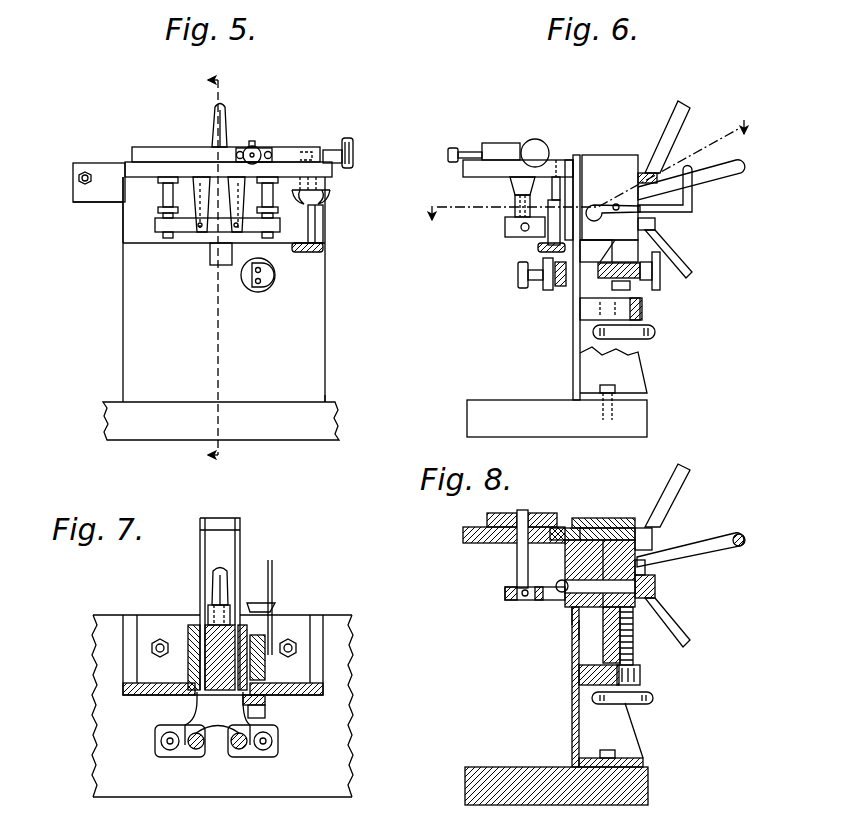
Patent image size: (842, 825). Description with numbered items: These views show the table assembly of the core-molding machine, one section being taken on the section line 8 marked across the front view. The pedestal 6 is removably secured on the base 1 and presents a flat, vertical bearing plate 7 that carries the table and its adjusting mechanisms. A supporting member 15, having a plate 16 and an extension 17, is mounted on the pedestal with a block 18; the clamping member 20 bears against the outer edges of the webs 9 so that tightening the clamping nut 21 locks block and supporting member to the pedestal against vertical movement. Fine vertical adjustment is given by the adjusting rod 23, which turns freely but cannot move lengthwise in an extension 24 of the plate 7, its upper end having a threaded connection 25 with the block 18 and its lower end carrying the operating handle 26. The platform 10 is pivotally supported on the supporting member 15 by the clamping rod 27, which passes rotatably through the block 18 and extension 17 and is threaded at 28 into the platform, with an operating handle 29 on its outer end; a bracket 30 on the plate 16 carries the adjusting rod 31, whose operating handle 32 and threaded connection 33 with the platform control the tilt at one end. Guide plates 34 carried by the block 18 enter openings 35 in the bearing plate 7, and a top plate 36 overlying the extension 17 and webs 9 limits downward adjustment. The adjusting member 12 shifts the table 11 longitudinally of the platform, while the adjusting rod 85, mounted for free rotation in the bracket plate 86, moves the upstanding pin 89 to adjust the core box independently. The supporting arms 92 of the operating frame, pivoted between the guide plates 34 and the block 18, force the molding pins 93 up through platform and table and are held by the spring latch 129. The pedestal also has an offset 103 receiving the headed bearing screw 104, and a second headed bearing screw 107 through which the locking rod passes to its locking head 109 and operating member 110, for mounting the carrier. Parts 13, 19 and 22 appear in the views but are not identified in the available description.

In FIG. 5, the base 1 is at (263, 440).
In FIG. 6, the base 1 is at (470, 424).
In FIG. 7, the base 1 is at (305, 797).
In FIG. 8, the base 1 is at (470, 790).
In FIG. 5, the pedestal 6 is at (325, 378).
In FIG. 6, the pedestal 6 is at (637, 393).
In FIG. 8, the pedestal 6 is at (628, 752).
In FIG. 5, the bearing plate 7 is at (224, 289).
In FIG. 6, the bearing plate 7 is at (573, 350).
In FIG. 7, the bearing plate 7 is at (125, 688).
In FIG. 8, the bearing plate 7 is at (572, 735).
In FIG. 5, the section line 8 is at (194, 262).
In FIG. 8, the section line 8 is at (572, 625).
In FIG. 6, the webs 9 is at (598, 250).
In FIG. 7, the webs 9 is at (190, 668).
In FIG. 8, the webs 9 is at (603, 615).
In FIG. 5, the platform 10 is at (140, 170).
In FIG. 6, the platform 10 is at (465, 170).
In FIG. 8, the platform 10 is at (463, 536).
In FIG. 5, the table 11 is at (170, 157).
In FIG. 6, the table 11 is at (493, 148).
In FIG. 8, the table 11 is at (487, 516).
In FIG. 5, the adjusting member 12 is at (348, 140).
In FIG. 6, the adjusting member 12 is at (545, 148).
In FIG. 5, the screw shaft 13 is at (330, 150).
In FIG. 6, the supporting member 15 is at (570, 165).
In FIG. 7, the supporting member 15 is at (325, 688).
In FIG. 8, the supporting member 15 is at (565, 565).
In FIG. 5, the plate 16 is at (125, 223).
In FIG. 7, the plate 16 is at (292, 698).
In FIG. 7, the extension 17 is at (218, 735).
In FIG. 8, the extension 17 is at (603, 527).
In FIG. 6, the block 18 is at (625, 248).
In FIG. 7, the block 18 is at (248, 630).
In FIG. 8, the block 18 is at (655, 608).
In FIG. 7, the bushing 19 is at (205, 630).
In FIG. 8, the clamping member 20 is at (565, 590).
In FIG. 6, the clamping nut 21 is at (657, 225).
In FIG. 7, the clamping nut 21 is at (255, 600).
In FIG. 8, the clamping nut 21 is at (655, 578).
In FIG. 6, the handle 22 is at (692, 272).
In FIG. 7, the handle 22 is at (224, 568).
In FIG. 8, the handle 22 is at (683, 632).
In FIG. 6, the adjusting rod 23 is at (630, 286).
In FIG. 8, the adjusting rod 23 is at (641, 678).
In FIG. 6, the extension 24 is at (642, 312).
In FIG. 8, the extension 24 is at (640, 670).
In FIG. 8, the threaded connection 25 is at (634, 638).
In FIG. 6, the operating handle 26 is at (655, 333).
In FIG. 8, the operating handle 26 is at (653, 699).
In FIG. 5, the clamping rod 27 is at (205, 181).
In FIG. 8, the clamping rod 27 is at (585, 527).
In FIG. 8, the threaded end 28 is at (565, 527).
In FIG. 5, the operating handle 29 is at (223, 118).
In FIG. 6, the operating handle 29 is at (690, 113).
In FIG. 8, the operating handle 29 is at (690, 484).
In FIG. 6, the bracket 30 is at (580, 200).
In FIG. 5, the adjusting rod 31 is at (325, 228).
In FIG. 6, the adjusting rod 31 is at (556, 237).
In FIG. 5, the operating handle 32 is at (325, 248).
In FIG. 6, the operating handle 32 is at (540, 249).
In FIG. 6, the threaded connection 33 is at (558, 180).
In FIG. 6, the guide plates 34 is at (633, 163).
In FIG. 7, the guide plates 34 is at (190, 632).
In FIG. 7, the openings 35 is at (160, 698).
In FIG. 8, the top plate 36 is at (640, 528).
In FIG. 5, the adjusting rod 85 is at (259, 151).
In FIG. 6, the adjusting rod 85 is at (460, 150).
In FIG. 5, the bracket plate 86 is at (240, 151).
In FIG. 5, the upstanding pin 89 is at (254, 143).
In FIG. 6, the supporting arms 92 is at (745, 167).
In FIG. 7, the supporting arms 92 is at (200, 541).
In FIG. 8, the supporting arms 92 is at (725, 533).
In FIG. 5, the molding pins 93 is at (207, 224).
In FIG. 6, the molding pins 93 is at (513, 200).
In FIG. 7, the molding pins 93 is at (192, 745).
In FIG. 8, the molding pins 93 is at (518, 555).
In FIG. 5, the offset 103 is at (75, 190).
In FIG. 5, the headed bearing screw 104 is at (75, 176).
In FIG. 5, the second headed bearing screw 107 is at (244, 281).
In FIG. 6, the second headed bearing screw 107 is at (545, 287).
In FIG. 7, the second headed bearing screw 107 is at (275, 718).
In FIG. 5, the locking head 109 is at (268, 277).
In FIG. 6, the locking head 109 is at (520, 278).
In FIG. 6, the operating member 110 is at (660, 281).
In FIG. 7, the operating member 110 is at (272, 600).
In FIG. 6, the spring latch 129 is at (695, 196).
In FIG. 7, the spring latch 129 is at (228, 600).